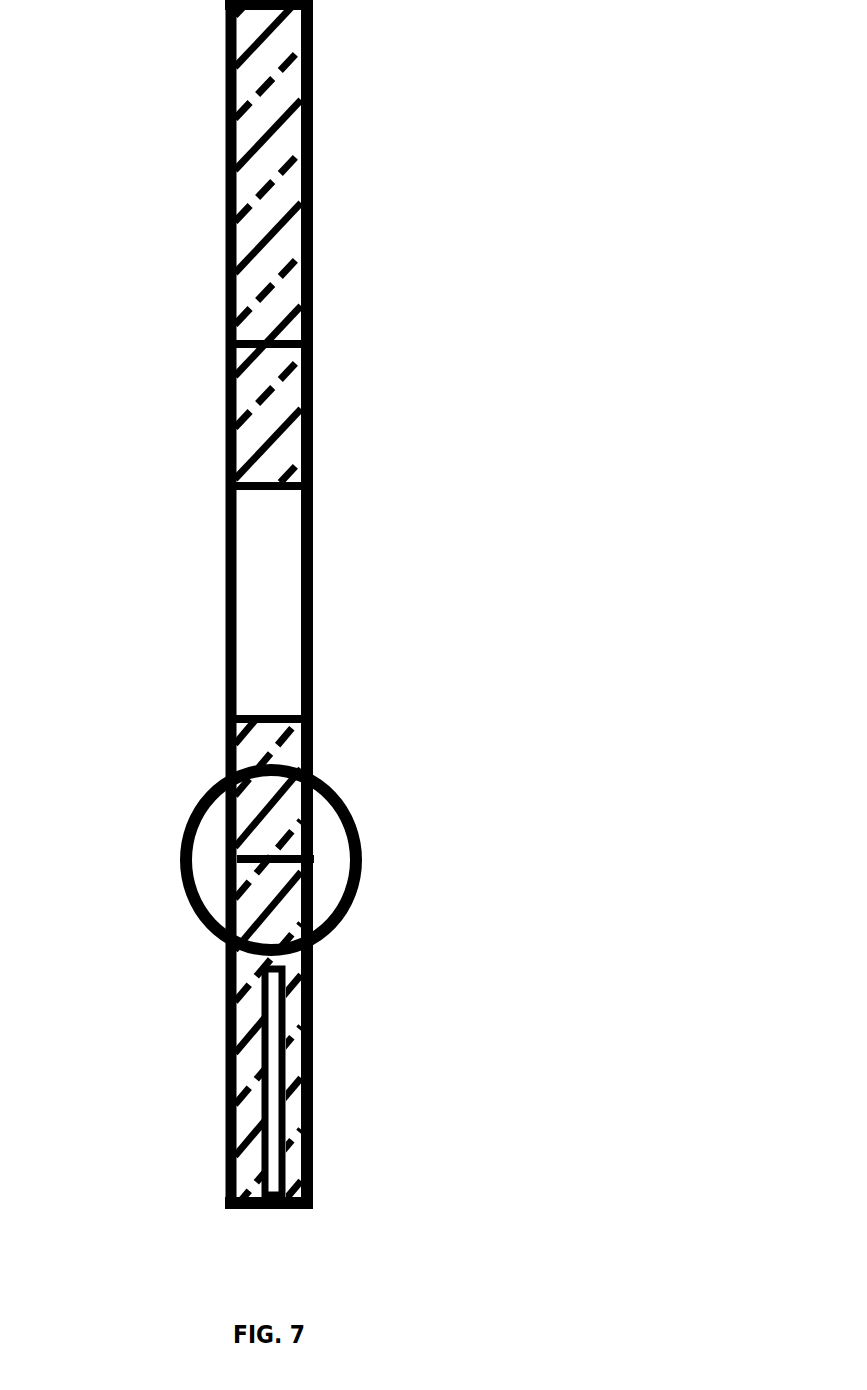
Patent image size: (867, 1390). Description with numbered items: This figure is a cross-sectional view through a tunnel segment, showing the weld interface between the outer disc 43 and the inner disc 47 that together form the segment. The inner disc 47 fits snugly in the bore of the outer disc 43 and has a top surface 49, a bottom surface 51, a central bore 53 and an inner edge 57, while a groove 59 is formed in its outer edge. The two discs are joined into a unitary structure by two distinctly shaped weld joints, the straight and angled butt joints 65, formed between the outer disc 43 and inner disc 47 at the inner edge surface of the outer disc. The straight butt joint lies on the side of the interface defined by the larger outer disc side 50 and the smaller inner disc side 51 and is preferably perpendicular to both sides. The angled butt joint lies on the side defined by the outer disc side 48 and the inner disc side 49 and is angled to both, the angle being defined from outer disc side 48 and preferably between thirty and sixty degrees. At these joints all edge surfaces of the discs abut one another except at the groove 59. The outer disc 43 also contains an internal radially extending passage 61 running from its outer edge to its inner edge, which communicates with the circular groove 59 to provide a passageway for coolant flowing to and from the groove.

The outer disc 43 is at (292, 147).
The inner disc 47 is at (316, 411).
The outer disc side 48 is at (225, 176).
The top surface of inner disc 49 is at (225, 739).
The larger outer disc side 50 is at (316, 246).
The bottom surface of inner disc 51 is at (318, 733).
The central bore 53 is at (269, 603).
The inner edge of inner disc 57 is at (228, 346).
The groove 59 is at (314, 861).
The internal radially extending passage 61 is at (240, 1212).
The straight and angled butt joints 65 is at (362, 812).